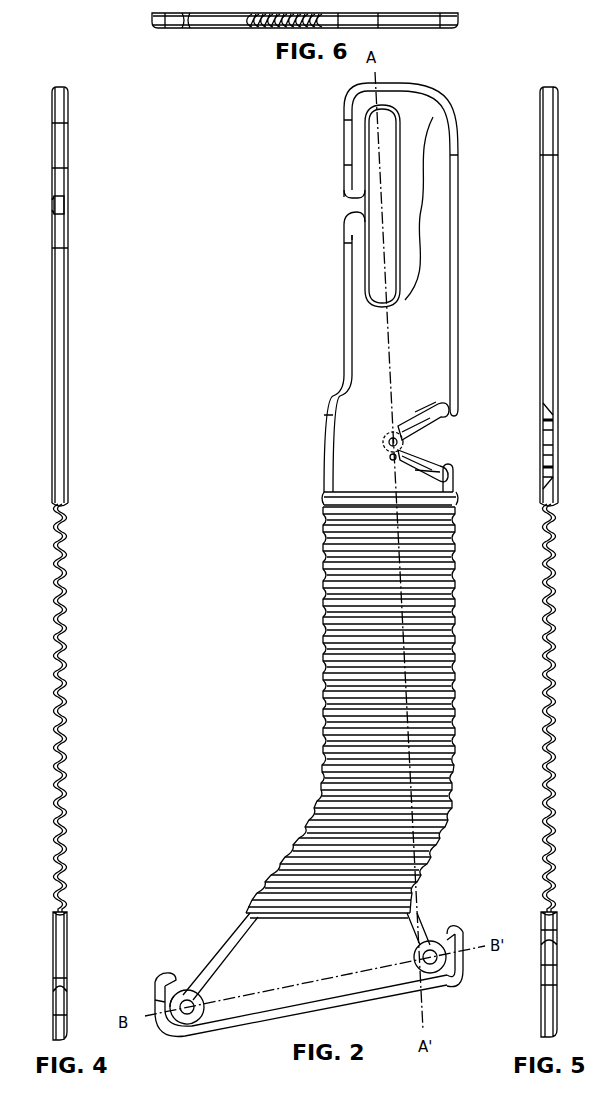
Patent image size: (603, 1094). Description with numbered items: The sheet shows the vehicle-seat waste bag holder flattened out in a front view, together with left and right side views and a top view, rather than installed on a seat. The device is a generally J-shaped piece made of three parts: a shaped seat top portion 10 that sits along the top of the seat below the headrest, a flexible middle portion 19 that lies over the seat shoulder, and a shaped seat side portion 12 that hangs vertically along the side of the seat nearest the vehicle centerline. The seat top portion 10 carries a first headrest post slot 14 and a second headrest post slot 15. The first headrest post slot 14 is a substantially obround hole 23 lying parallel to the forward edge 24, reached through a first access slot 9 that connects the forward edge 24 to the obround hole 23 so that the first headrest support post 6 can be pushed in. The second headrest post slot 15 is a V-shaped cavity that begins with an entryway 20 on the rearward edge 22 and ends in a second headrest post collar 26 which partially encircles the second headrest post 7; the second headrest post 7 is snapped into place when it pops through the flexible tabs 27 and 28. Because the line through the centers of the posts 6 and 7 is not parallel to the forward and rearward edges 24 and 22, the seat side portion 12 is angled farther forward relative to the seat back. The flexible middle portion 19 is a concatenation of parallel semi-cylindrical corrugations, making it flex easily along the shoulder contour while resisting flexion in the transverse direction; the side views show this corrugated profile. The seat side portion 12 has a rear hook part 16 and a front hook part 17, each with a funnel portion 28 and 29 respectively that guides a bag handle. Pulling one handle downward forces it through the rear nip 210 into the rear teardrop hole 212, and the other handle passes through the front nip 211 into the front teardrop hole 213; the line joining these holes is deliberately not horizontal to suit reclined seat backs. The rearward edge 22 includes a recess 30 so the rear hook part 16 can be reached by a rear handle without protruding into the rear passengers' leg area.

The first headrest support post 6 is at (362, 226).
The second headrest post 7 is at (384, 447).
The first access slot 9 is at (348, 207).
The seat top portion 10 is at (355, 500).
The seat side portion 12 is at (303, 935).
The first headrest post slot 14 is at (430, 203).
The second headrest post slot 15 is at (468, 400).
The rear hook part 16 is at (468, 968).
The front hook part 17 is at (145, 990).
The flexible middle portion 19 is at (355, 660).
The entryway 20 is at (437, 440).
The rearward edge 22 is at (459, 378).
The obround hole 23 is at (372, 152).
The forward edge 24 is at (343, 308).
The second headrest post collar 26 is at (388, 428).
The flexible tab 27 is at (386, 470).
The flexible tab / funnel portion 28 is at (383, 432).
The funnel portion 29 is at (175, 968).
The recess 30 is at (468, 908).
The rear nip 210 is at (425, 945).
The front nip 211 is at (188, 997).
The rear teardrop hole 212 is at (443, 988).
The front teardrop hole 213 is at (168, 1023).